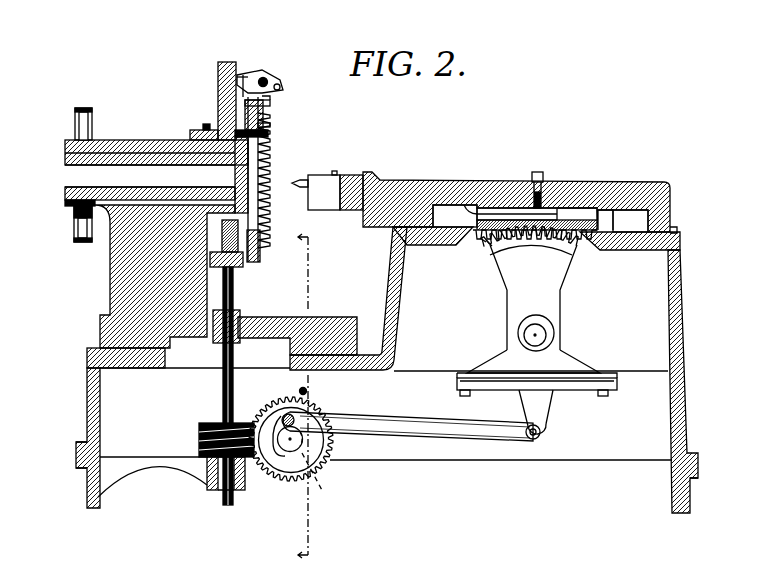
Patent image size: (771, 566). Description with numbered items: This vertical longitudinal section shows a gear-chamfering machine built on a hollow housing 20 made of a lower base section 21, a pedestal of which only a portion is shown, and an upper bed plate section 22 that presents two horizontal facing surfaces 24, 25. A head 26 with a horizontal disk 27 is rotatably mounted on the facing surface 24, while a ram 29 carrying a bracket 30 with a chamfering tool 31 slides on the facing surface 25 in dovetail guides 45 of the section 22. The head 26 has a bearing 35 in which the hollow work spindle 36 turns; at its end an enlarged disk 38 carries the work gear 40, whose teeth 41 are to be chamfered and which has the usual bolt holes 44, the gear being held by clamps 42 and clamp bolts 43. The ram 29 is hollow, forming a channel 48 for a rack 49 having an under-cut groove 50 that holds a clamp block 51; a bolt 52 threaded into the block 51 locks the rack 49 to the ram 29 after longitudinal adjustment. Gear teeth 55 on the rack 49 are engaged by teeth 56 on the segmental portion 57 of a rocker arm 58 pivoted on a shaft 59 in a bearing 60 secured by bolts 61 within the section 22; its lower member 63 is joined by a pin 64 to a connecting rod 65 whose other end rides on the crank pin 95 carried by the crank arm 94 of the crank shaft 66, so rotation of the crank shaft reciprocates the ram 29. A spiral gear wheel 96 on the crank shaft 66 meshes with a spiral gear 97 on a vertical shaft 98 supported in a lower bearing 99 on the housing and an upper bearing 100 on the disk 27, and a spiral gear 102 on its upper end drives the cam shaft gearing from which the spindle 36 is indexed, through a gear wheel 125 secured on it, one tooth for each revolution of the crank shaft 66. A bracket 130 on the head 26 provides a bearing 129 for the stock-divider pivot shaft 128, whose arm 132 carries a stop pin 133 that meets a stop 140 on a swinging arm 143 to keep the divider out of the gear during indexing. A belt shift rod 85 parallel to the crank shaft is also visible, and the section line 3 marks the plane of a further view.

The section line 3- 3 is at (295, 397).
The housing 20 is at (90, 350).
The lower base section 21 is at (82, 487).
The upper bed plate section 22 is at (87, 421).
The facing surface 24 is at (96, 348).
The facing surface 25 is at (680, 234).
The head 26 is at (110, 282).
The horizontal disk 27 is at (358, 340).
The ram 29 is at (414, 181).
The bracket 30 is at (354, 175).
The chamfering tool 31 is at (311, 175).
The bearing 35 is at (140, 140).
The work spindle 36 is at (65, 193).
The enlarged disk 38 is at (214, 128).
The gear 40 is at (266, 103).
The teeth 41 is at (265, 112).
The clamps 42 is at (270, 152).
The clamp bolts 43 is at (268, 135).
The bolt holes 44 is at (270, 125).
The guides 45 is at (679, 230).
The longitudinal channel 48 is at (632, 210).
The rack 49 is at (600, 210).
The under-cut groove 50 is at (466, 205).
The clamp block 51 is at (575, 207).
The bolt 52 is at (540, 172).
The gear teeth 55 is at (483, 240).
The teeth 56 is at (490, 243).
The segmental portion 57 is at (572, 258).
The rocker arm 58 is at (507, 316).
The shaft 59 is at (540, 334).
The bearing 60 is at (572, 367).
The bolts 61 is at (606, 396).
The lower member 63 is at (548, 412).
The pin 64 is at (533, 440).
The connecting rod 65 is at (420, 418).
The crank shaft 66 is at (315, 472).
The belt shift rod 85 is at (308, 391).
The crank arm 94 is at (283, 458).
The crank pin 95 is at (285, 416).
The spiral gear wheel 96 is at (320, 466).
The spiral gear 97 is at (199, 438).
The vertical shaft 98 is at (238, 297).
The bearing 99 is at (214, 490).
The bearing 100 is at (213, 343).
The spiral gear 102 is at (243, 262).
The gear wheel 125 is at (75, 119).
The pivot shaft 128 is at (262, 77).
The bearing 129 is at (238, 76).
The bracket 130 is at (218, 90).
The arm 132 is at (277, 72).
The stop pin 133 is at (280, 85).
The stop 140 is at (270, 98).
The arm 143 is at (243, 72).